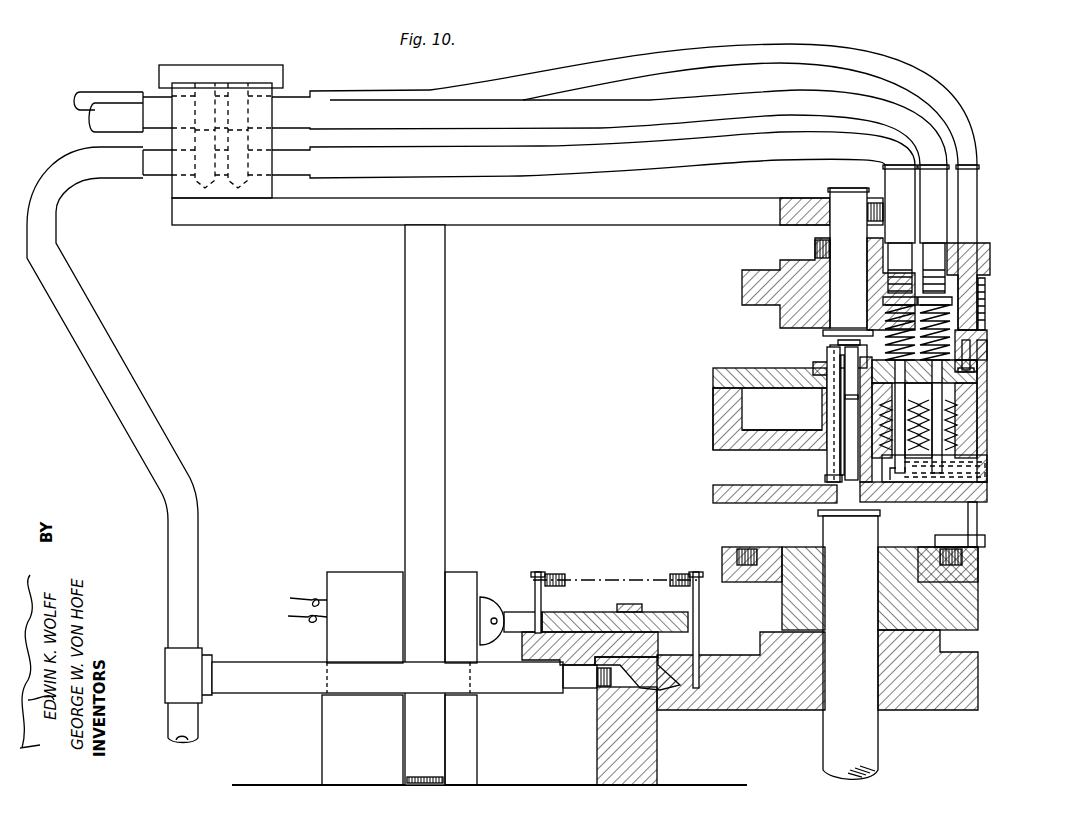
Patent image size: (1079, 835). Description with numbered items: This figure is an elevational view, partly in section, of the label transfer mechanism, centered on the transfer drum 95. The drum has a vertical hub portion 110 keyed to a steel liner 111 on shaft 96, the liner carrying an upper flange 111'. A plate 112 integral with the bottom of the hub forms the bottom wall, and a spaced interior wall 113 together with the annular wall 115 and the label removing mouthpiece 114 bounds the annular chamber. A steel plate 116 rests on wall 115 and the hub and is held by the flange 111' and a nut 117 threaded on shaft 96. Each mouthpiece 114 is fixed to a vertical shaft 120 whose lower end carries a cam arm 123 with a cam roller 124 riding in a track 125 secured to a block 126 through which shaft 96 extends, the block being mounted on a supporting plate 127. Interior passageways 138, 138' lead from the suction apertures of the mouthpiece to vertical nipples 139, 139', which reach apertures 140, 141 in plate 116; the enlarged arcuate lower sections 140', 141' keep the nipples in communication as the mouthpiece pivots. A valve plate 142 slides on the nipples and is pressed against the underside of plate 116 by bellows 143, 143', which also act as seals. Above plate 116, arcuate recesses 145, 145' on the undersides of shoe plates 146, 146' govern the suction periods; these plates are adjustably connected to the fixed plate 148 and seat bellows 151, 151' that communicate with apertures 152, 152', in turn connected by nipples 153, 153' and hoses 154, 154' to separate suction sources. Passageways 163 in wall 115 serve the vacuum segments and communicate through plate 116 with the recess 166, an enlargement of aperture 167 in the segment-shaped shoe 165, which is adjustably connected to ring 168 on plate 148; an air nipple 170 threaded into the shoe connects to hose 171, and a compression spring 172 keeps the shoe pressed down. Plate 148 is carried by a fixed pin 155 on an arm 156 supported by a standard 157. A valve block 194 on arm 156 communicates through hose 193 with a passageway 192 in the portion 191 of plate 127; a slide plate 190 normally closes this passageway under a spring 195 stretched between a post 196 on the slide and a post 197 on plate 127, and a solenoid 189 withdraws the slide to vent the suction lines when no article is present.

The valve block 194 is at (283, 70).
The hose 154' is at (773, 117).
The hose 171 is at (960, 108).
The hose 154 is at (717, 154).
The arm 156 is at (755, 197).
The fixed pin 155 is at (846, 190).
The nipple 153 is at (900, 204).
The nipple 153' is at (936, 204).
The air nipple 170 is at (977, 207).
The aperture 152 is at (901, 260).
The aperture 152' is at (941, 260).
The fixed plate 148 is at (755, 268).
The ring 168 is at (985, 246).
The compression spring 172 is at (985, 282).
The bellows 151 is at (875, 300).
The bellows 151' is at (975, 299).
The ring-shaped plate 146 is at (874, 332).
The segment-shaped plate 146' is at (976, 332).
The aperture 167 is at (977, 360).
The segment-shaped shoe 165 is at (970, 355).
The arcuately shaped recess 166 is at (974, 370).
The nut 117 is at (825, 347).
The steel plate 116 is at (745, 372).
The flange 111' is at (800, 359).
The arcuately shaped recess 145 is at (854, 419).
The arcuately shaped recess 145' is at (1005, 411).
The aperture 141 is at (848, 413).
The valve plate 142 is at (960, 378).
The aperture 140 is at (970, 416).
The lower section of aperture 140' is at (1014, 420).
The lower section of aperture 141' is at (820, 400).
The nipple 139 is at (870, 428).
The nipple 139' is at (982, 428).
The drum 95 is at (706, 414).
The annular wall 115 is at (738, 410).
The steel liner 111 is at (817, 415).
The passageways 163 is at (960, 430).
The bellows 143 is at (878, 431).
The bellows 143' is at (978, 434).
The interior wall 113 is at (745, 450).
The hub portion 110 is at (823, 465).
The interior passageways 138' is at (974, 479).
The plate 112 is at (742, 503).
The label removing mouthpiece 114 is at (860, 516).
The interior passageways 138 is at (933, 504).
The cam arm 123 is at (943, 535).
The shaft 120 is at (977, 518).
The cam roller 124 is at (962, 550).
The track 125 is at (972, 575).
The block 126 is at (972, 610).
The supporting plate 127 is at (972, 673).
The shaft 96 is at (850, 647).
The standard 157 is at (445, 352).
The hose 193 is at (168, 420).
The solenoid 189 is at (360, 585).
The spring 195 is at (605, 580).
The post 196 is at (535, 592).
The plate 190 is at (600, 612).
The post 197 is at (700, 600).
The portion of plate 191 is at (545, 650).
The passageway 192 is at (635, 680).